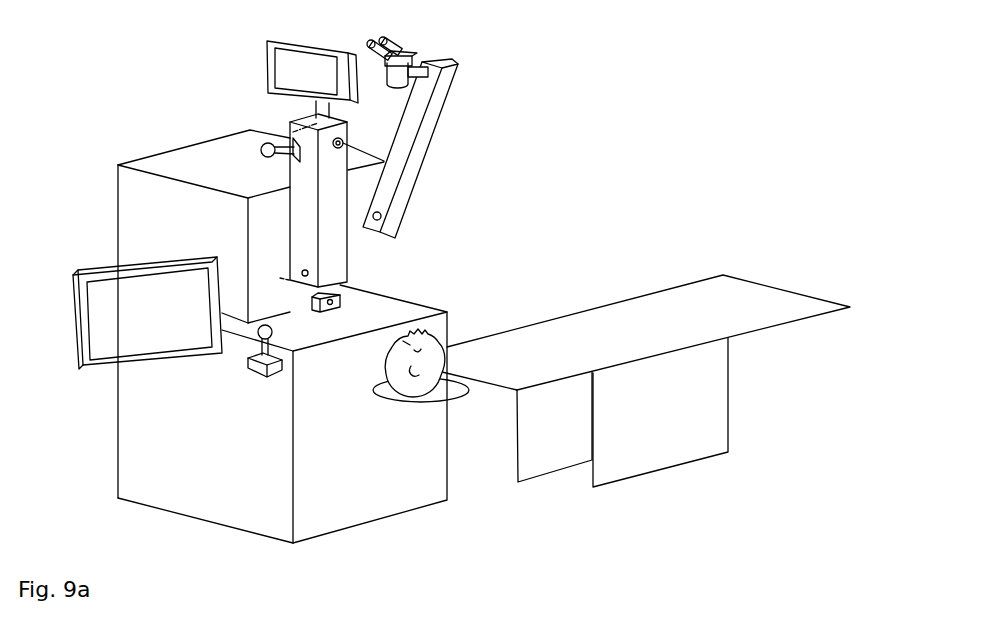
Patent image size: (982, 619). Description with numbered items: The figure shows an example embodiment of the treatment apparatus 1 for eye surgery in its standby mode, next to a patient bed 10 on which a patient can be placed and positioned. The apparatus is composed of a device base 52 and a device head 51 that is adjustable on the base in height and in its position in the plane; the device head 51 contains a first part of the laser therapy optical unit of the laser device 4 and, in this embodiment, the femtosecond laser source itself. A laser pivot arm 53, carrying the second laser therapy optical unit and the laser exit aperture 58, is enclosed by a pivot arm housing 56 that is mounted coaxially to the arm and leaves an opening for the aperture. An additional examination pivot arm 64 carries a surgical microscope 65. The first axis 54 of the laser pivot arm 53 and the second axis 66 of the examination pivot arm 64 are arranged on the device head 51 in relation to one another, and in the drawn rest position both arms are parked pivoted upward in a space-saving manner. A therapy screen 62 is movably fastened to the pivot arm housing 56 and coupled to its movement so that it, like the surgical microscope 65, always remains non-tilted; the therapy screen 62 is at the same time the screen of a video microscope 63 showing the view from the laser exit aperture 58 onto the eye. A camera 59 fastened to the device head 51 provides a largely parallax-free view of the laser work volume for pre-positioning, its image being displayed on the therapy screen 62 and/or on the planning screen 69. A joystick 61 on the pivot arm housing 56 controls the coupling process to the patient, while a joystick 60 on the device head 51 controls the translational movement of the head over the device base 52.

The treatment apparatus 1 is at (259, 313).
The laser device 4 is at (204, 290).
The patient bed 10 is at (692, 284).
The device head 51 is at (224, 147).
The device base 52 is at (127, 428).
The laser pivot arm 53 is at (373, 200).
The first axis 54 is at (341, 165).
The pivot arm housing 56 is at (340, 257).
The laser exit aperture 58 is at (386, 133).
The camera 59 is at (343, 300).
The joystick 60 is at (270, 352).
The joystick 61 is at (268, 143).
The therapy screen 62 is at (317, 50).
The video microscope 63 is at (471, 99).
The examination pivot arm 64 is at (425, 150).
The surgical microscope 65 is at (413, 58).
The second axis 66 is at (384, 212).
The planning screen 69 is at (108, 287).